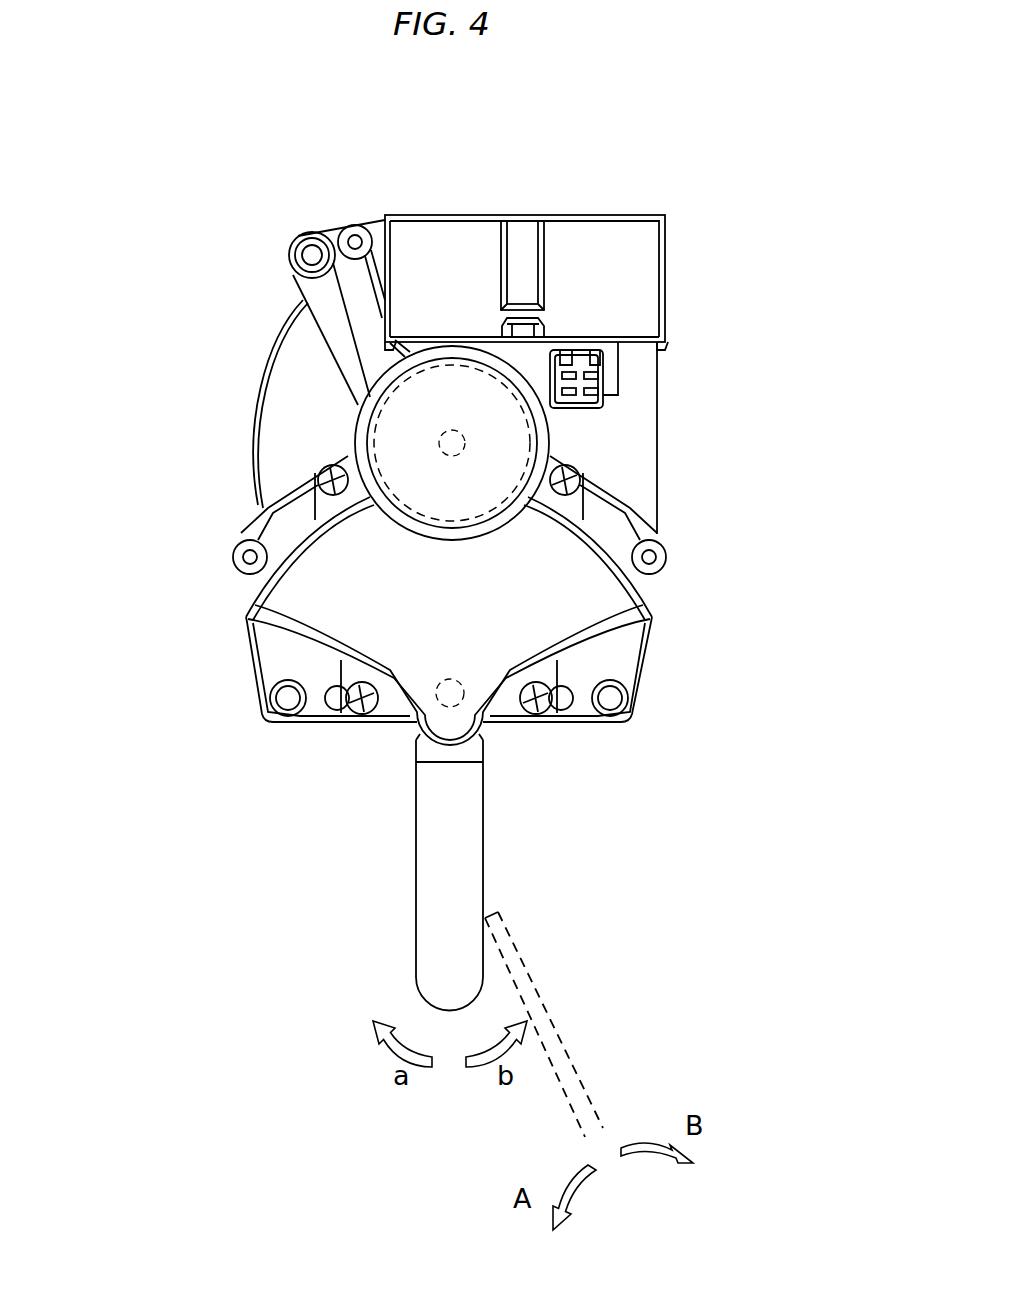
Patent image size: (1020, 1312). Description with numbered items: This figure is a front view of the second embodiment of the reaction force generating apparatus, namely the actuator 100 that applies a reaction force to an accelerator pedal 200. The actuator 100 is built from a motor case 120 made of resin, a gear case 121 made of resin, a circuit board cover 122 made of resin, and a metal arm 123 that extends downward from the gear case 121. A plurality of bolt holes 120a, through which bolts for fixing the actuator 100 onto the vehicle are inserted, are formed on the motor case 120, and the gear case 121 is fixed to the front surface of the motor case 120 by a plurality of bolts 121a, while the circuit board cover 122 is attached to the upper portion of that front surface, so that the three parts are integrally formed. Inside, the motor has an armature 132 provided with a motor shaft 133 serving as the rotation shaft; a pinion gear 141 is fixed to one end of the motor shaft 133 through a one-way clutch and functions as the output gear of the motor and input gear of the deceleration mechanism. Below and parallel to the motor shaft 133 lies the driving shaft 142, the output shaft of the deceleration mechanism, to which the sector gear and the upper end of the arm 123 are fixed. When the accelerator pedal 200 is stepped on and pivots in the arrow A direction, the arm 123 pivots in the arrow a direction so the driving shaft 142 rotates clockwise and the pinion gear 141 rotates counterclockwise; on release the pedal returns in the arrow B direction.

The actuator 100 is at (682, 196).
The motor case 120 is at (254, 393).
The bolt holes 120a is at (628, 705).
The gear case 121 is at (652, 608).
The bolts 121a is at (578, 467).
The circuit board cover 122 is at (664, 287).
The arm 123 is at (415, 855).
The armature 132 is at (277, 442).
The motor shaft 133 is at (443, 438).
The pinion gear 141 is at (452, 428).
The driving shaft 142 is at (482, 733).
The accelerator pedal 200 is at (537, 988).